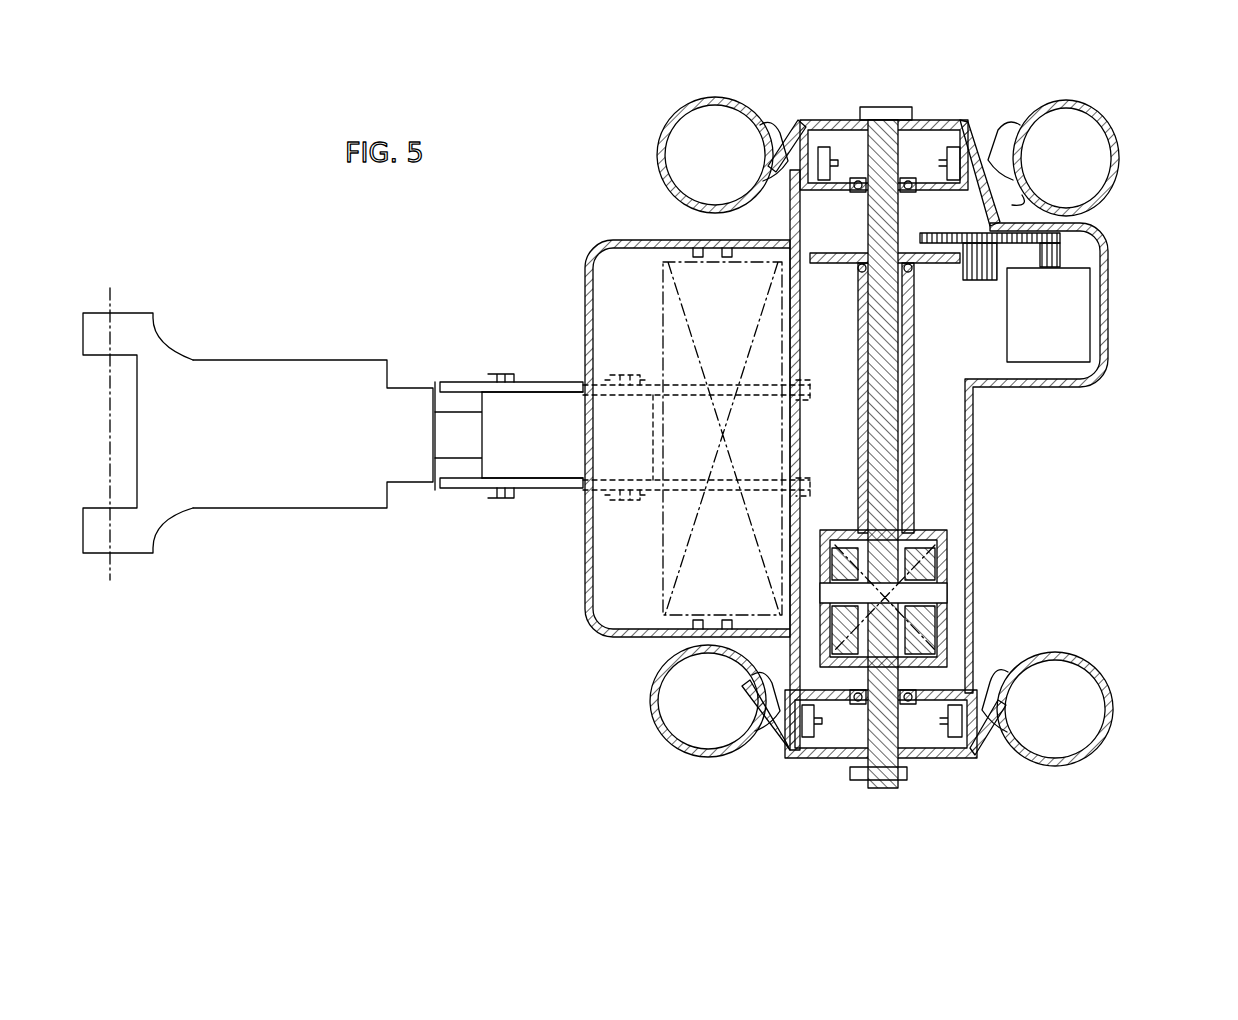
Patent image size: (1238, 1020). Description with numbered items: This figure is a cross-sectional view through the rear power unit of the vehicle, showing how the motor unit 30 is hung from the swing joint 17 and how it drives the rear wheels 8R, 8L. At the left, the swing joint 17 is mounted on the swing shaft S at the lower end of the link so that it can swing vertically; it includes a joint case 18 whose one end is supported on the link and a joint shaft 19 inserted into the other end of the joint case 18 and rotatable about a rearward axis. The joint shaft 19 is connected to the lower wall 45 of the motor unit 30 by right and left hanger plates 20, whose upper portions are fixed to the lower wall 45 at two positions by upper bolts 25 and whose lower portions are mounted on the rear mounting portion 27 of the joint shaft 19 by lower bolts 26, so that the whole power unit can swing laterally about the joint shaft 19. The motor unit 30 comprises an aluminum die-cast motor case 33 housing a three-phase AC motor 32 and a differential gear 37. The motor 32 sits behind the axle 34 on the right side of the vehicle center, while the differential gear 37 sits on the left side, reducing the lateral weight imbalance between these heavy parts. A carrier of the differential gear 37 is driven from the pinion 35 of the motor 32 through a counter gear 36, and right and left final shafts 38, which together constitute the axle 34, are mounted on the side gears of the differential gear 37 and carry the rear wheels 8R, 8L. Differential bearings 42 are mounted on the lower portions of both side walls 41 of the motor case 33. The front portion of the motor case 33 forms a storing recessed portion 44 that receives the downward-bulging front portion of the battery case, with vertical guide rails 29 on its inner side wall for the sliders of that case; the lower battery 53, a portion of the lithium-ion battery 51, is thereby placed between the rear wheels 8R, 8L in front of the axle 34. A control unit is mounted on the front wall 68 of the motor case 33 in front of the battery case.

The swing shaft S is at (113, 568).
The swing joint 17 is at (300, 512).
The joint case 18 is at (348, 488).
The joint shaft 19 is at (463, 440).
The hanger plates 20 is at (457, 381).
The upper bolts 25 is at (585, 378).
The lower bolts 26 is at (500, 372).
The rear mounting portion 27 is at (540, 405).
The guide rails 29 is at (742, 252).
The motor unit 30 is at (1088, 458).
The motor 32 is at (1065, 326).
The motor case 33 is at (1108, 312).
The axle 34 is at (905, 142).
The pinion 35 is at (1090, 258).
The counter gear 36 is at (968, 235).
The differential gear 37 is at (950, 565).
The final shafts 38 is at (907, 453).
The side walls 41 is at (690, 243).
The differential bearings 42 is at (866, 180).
The storing recessed portion 44 is at (737, 314).
The lower wall 45 is at (669, 458).
The battery 51 is at (643, 458).
The lower battery 53 is at (643, 458).
The front wall 68 is at (583, 503).
The right rear wheel 8R is at (1120, 160).
The left rear wheel 8L is at (1115, 708).